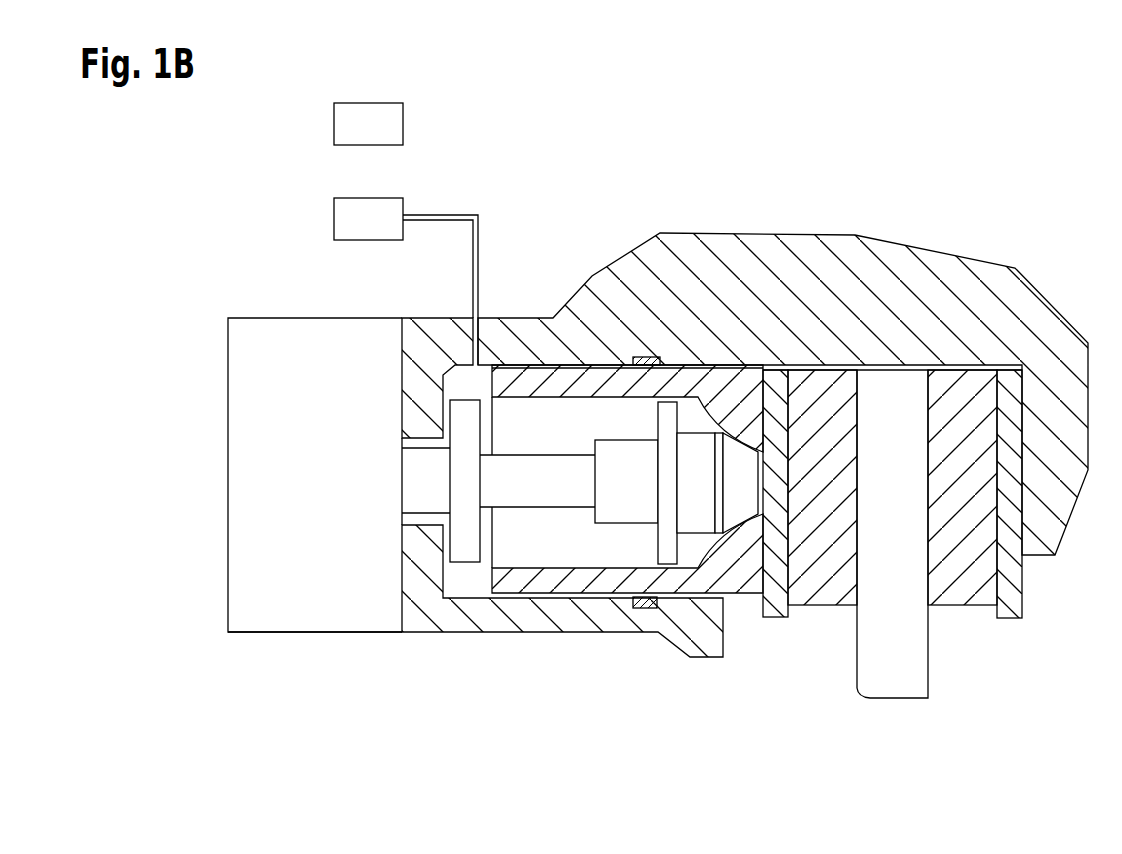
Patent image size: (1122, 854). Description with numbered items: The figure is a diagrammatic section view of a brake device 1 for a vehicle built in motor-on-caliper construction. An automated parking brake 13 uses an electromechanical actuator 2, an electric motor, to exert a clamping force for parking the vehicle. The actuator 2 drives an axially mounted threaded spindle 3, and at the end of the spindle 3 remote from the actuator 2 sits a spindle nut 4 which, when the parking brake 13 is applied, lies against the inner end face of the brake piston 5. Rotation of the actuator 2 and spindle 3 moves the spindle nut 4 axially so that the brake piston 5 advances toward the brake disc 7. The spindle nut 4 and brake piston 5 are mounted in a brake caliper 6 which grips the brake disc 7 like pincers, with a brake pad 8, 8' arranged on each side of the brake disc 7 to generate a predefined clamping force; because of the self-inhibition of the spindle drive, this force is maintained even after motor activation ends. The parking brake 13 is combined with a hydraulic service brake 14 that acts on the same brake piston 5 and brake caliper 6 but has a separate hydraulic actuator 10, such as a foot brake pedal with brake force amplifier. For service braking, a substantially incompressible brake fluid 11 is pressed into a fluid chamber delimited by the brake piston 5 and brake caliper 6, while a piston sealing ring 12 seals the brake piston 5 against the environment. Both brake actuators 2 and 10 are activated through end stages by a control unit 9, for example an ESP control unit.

The brake device 1 is at (745, 385).
The electromechanical actuator 2 is at (297, 347).
The spindle 3 is at (533, 486).
The spindle nut 4 is at (631, 497).
The brake piston 5 is at (582, 583).
The brake caliper 6 is at (766, 248).
The brake disc 7 is at (890, 670).
The brake pad 8 is at (822, 559).
The brake pad 8' is at (962, 559).
The control unit 9 is at (435, 117).
The hydraulic actuator 10 is at (370, 217).
The brake fluid 11 is at (465, 578).
The piston sealing ring 12 is at (650, 608).
The automated parking brake 13 is at (349, 680).
The service brake 14 is at (462, 222).